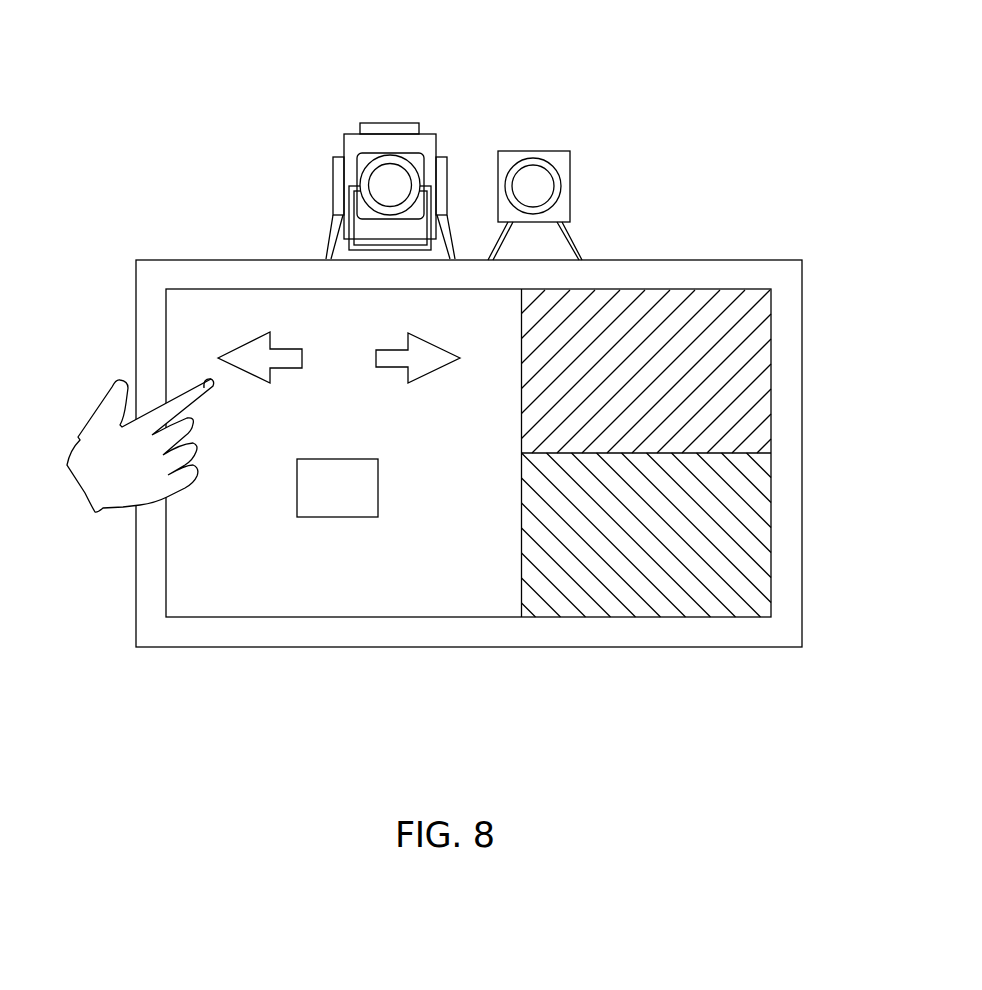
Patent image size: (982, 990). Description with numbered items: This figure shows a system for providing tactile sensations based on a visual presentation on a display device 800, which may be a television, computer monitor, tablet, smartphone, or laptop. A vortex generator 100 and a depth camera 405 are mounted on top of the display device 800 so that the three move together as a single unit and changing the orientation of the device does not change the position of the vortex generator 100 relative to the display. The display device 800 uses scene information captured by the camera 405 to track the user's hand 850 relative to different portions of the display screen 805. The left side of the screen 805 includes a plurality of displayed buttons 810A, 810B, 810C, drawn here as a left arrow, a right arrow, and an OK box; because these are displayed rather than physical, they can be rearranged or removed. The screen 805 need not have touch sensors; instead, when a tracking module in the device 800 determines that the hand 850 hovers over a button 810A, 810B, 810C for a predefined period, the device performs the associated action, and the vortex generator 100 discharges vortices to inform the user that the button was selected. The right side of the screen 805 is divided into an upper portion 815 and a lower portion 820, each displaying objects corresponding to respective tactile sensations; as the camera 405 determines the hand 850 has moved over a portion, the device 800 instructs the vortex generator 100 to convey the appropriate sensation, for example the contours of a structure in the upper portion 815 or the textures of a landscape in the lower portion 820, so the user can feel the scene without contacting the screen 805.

The vortex generator 100 is at (300, 136).
The depth camera 405 is at (570, 166).
The display device 800 is at (802, 517).
The display screen 805 is at (770, 356).
The displayed button 810A is at (238, 346).
The displayed button 810B is at (450, 350).
The displayed button 810C is at (323, 517).
The upper portion 815 is at (666, 376).
The lower portion 820 is at (666, 546).
The user's hand 850 is at (85, 432).